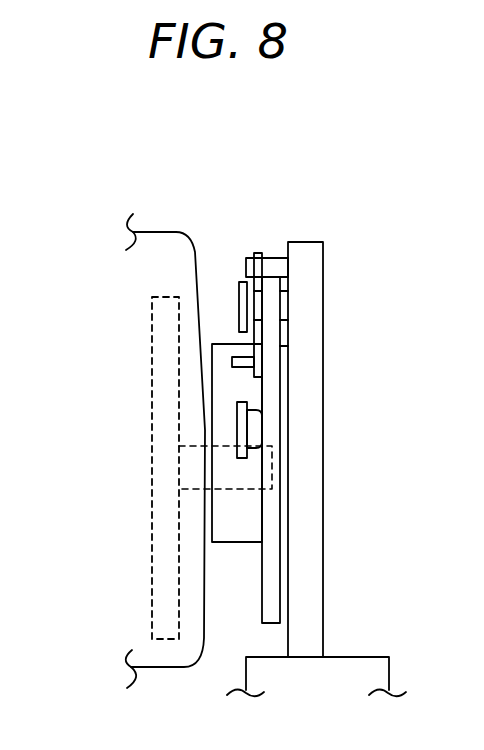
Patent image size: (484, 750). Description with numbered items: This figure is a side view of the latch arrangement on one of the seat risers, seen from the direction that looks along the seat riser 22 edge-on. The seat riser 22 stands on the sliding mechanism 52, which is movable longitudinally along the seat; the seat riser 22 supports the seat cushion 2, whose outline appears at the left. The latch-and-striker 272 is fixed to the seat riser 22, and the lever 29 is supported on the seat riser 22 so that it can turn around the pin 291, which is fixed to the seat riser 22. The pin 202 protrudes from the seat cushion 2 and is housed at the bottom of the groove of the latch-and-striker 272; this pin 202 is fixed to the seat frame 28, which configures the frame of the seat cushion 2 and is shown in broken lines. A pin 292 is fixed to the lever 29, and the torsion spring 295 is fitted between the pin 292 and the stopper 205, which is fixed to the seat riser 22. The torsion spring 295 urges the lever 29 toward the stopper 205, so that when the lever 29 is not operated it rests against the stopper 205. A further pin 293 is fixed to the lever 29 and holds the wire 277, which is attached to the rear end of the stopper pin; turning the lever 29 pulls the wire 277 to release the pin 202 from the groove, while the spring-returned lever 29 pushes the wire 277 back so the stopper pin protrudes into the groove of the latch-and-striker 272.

The seat cushion 2 is at (164, 259).
The seat frame 28 is at (162, 376).
The pin 202 is at (190, 466).
The latch-and-striker 272 is at (232, 518).
The pin 292 is at (240, 357).
The pin 291 is at (238, 283).
The torsion spring 295 is at (258, 253).
The stopper 205 is at (277, 258).
The lever 29 is at (282, 357).
The pin 293 is at (246, 401).
The wire 277 is at (256, 430).
The seat riser 22 is at (323, 492).
The sliding mechanism 52 is at (362, 657).